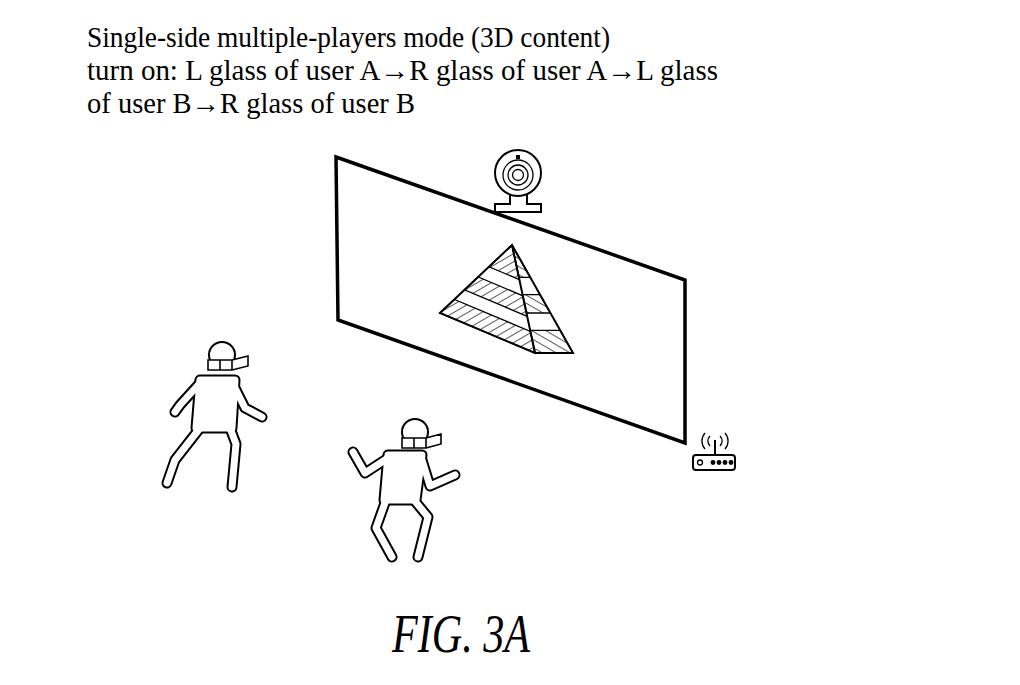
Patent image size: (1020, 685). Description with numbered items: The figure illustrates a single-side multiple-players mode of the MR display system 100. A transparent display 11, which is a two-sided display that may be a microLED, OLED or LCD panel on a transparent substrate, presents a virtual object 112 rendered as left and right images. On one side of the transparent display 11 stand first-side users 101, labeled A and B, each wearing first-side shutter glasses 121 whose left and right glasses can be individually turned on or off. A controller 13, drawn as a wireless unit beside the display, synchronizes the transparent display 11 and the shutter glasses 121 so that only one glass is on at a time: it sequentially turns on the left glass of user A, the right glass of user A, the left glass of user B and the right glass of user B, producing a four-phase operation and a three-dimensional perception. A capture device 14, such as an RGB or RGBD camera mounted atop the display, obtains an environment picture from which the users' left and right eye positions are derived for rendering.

The MR display system 100 is at (306, 197).
The transparent display 11 is at (660, 268).
The virtual object 112 is at (540, 292).
The capture device 14 is at (536, 160).
The controller 13 is at (737, 462).
The first-side users 101 is at (236, 385).
The first-side shutter glasses 121 is at (242, 348).